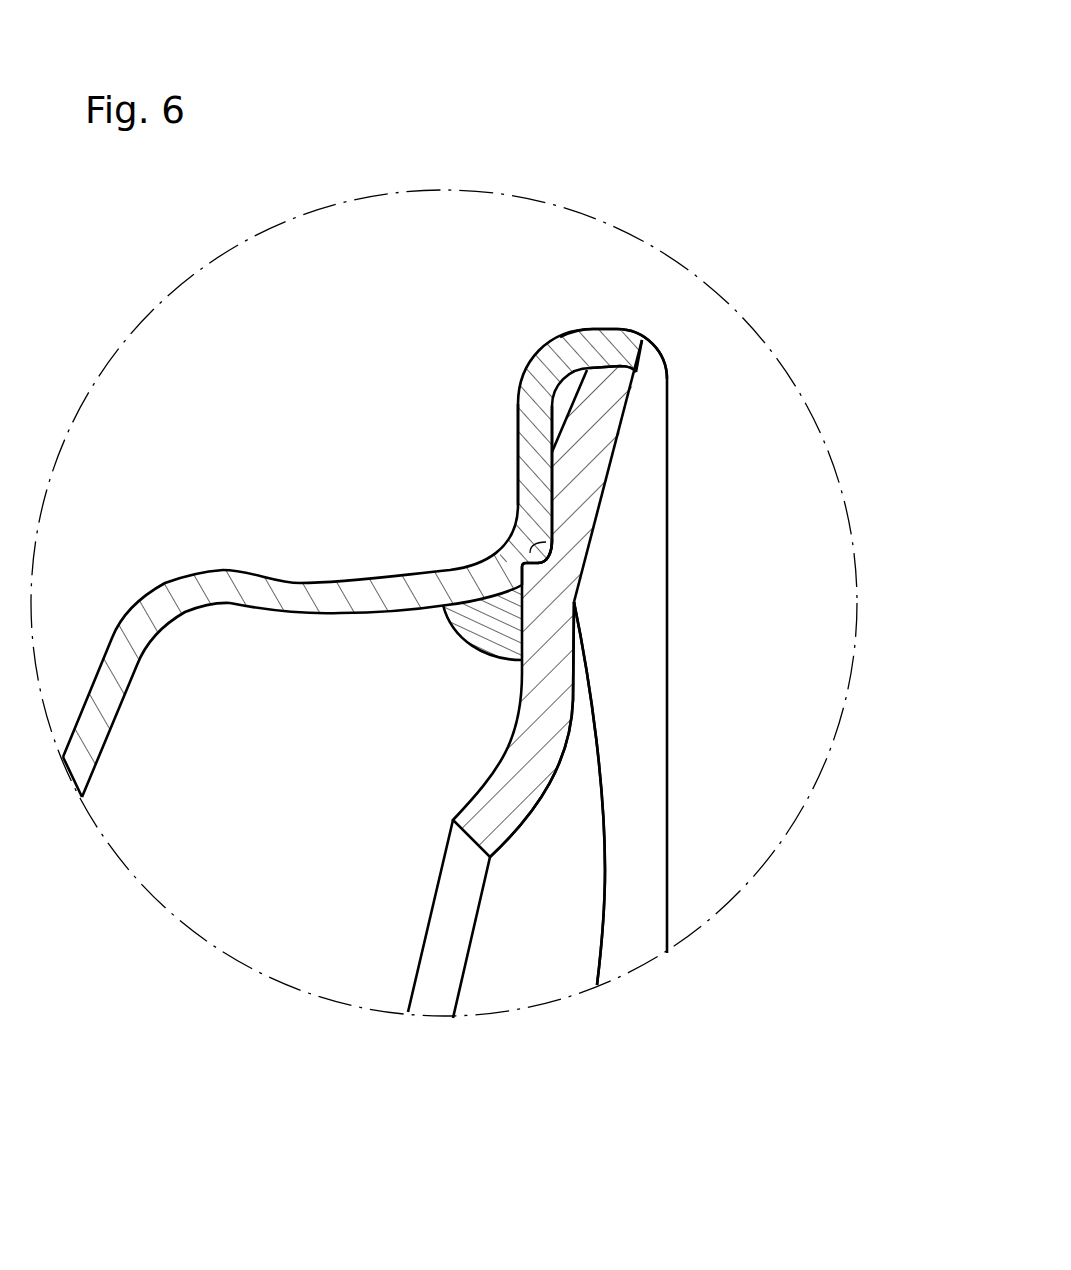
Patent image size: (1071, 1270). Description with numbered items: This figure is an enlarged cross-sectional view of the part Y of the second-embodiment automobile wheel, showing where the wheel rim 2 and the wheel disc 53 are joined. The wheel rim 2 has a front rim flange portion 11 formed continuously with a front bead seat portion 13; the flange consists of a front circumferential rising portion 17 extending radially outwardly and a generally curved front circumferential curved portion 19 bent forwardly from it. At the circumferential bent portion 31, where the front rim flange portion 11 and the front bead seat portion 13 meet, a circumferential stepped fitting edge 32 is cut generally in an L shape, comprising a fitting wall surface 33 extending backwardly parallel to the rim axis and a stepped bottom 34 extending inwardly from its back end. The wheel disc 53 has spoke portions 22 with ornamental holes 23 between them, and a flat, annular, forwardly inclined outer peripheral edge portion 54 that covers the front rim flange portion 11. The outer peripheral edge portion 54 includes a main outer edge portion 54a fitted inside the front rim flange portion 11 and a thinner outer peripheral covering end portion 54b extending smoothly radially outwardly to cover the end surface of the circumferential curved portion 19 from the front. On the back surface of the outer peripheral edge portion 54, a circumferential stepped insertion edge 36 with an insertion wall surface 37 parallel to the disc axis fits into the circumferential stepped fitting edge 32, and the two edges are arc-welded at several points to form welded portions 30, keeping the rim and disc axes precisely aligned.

The part Y is at (560, 202).
The wheel rim 2 is at (93, 725).
The front rim flange portion 11 is at (563, 350).
The front bead seat portion 13 is at (358, 593).
The front circumferential rising portion 17 is at (530, 433).
The front circumferential curved portion 19 is at (620, 343).
The spoke portion 22 is at (567, 950).
The ornamental hole 23 is at (445, 955).
The welded portion 30 is at (500, 640).
The circumferential bent portion 31 is at (493, 572).
The circumferential stepped fitting edge 32 is at (537, 575).
The fitting wall surface 33 is at (530, 565).
The stepped bottom 34 is at (540, 590).
The circumferential stepped insertion edge 36 is at (520, 562).
The insertion wall surface 37 is at (555, 542).
The wheel disc 53 is at (647, 708).
The outer peripheral edge portion 54 is at (596, 432).
The main outer edge portion 54a is at (625, 407).
The outer peripheral covering end portion 54b is at (652, 353).